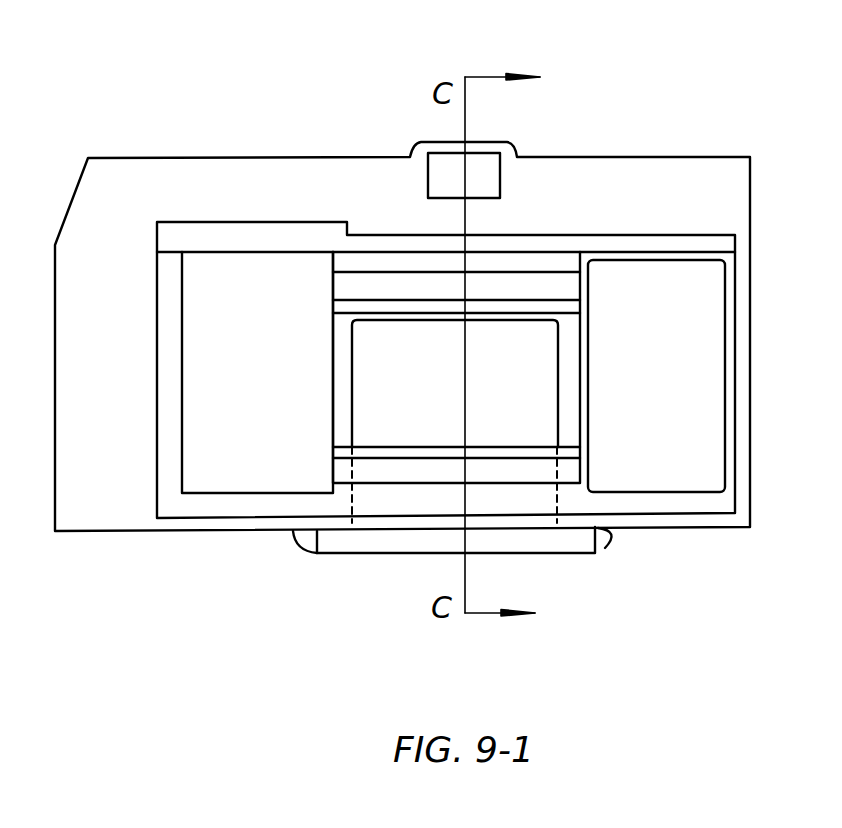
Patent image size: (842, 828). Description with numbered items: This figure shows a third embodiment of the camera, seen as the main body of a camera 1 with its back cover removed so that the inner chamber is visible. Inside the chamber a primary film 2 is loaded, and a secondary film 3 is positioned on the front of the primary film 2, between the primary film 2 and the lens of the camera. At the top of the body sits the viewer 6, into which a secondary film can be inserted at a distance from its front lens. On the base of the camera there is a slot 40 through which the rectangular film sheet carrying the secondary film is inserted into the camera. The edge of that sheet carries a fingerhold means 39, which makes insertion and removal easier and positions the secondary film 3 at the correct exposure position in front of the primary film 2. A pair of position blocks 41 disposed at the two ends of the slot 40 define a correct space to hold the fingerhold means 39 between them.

The main body of a camera 1 is at (593, 175).
The primary film 2 is at (570, 350).
The secondary film 3 is at (543, 387).
The viewer 6 is at (450, 165).
The fingerhold means 39 is at (422, 542).
The slot 40 is at (368, 530).
The position blocks 41 is at (605, 540).